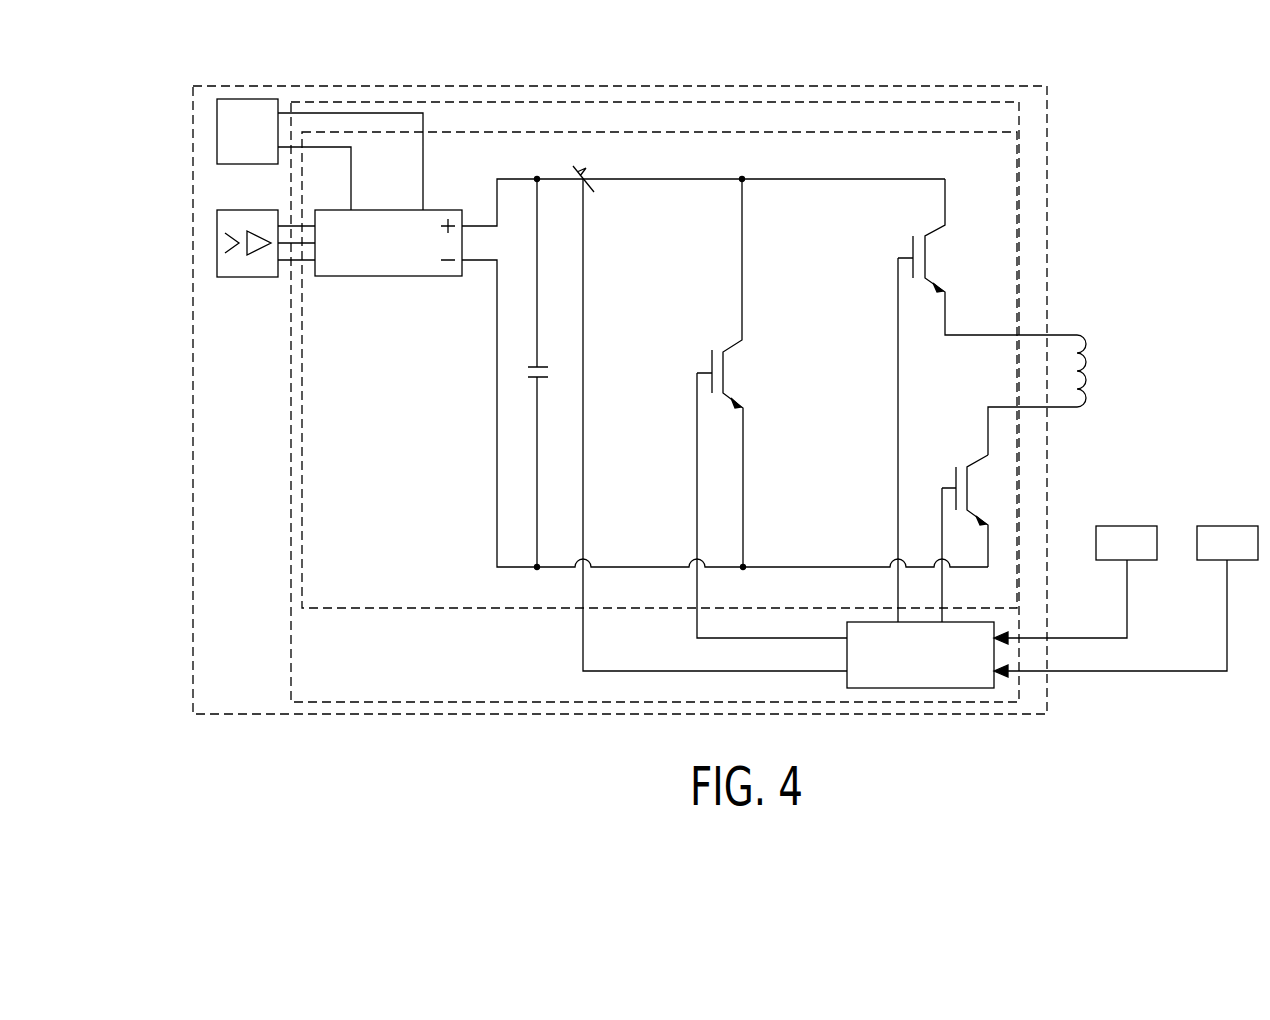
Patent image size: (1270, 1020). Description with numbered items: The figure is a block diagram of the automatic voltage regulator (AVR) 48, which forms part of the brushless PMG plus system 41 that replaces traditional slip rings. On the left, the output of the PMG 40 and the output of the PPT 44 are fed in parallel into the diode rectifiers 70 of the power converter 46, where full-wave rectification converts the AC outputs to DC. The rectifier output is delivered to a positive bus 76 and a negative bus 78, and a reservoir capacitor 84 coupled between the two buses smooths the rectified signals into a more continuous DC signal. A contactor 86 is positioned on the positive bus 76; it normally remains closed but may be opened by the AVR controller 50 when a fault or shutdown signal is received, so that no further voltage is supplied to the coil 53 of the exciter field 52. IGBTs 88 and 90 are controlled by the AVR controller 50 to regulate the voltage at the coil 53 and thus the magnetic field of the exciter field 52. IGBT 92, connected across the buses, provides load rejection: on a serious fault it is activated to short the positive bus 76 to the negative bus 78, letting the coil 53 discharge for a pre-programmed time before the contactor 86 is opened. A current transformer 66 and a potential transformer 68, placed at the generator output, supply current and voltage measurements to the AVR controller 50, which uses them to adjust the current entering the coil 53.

The PMG 40 is at (217, 133).
The brushless PMG plus system 41 is at (622, 86).
The PPT 44 is at (217, 245).
The power converter 46 is at (663, 132).
The automatic voltage regulator (AVR) 48 is at (660, 102).
The AVR controller 50 is at (920, 689).
The exciter field 52 is at (1102, 360).
The coil 53 is at (1086, 406).
The current transformer 66 is at (1125, 526).
The potential transformer 68 is at (1226, 526).
The diode rectifiers 70 is at (387, 209).
The positive bus 76 is at (512, 178).
The negative bus 78 is at (513, 567).
The reservoir capacitor 84 is at (544, 369).
The contactor 86 is at (591, 172).
The IGBT 88 is at (942, 224).
The IGBT 90 is at (985, 460).
The IGBT 92 is at (740, 340).